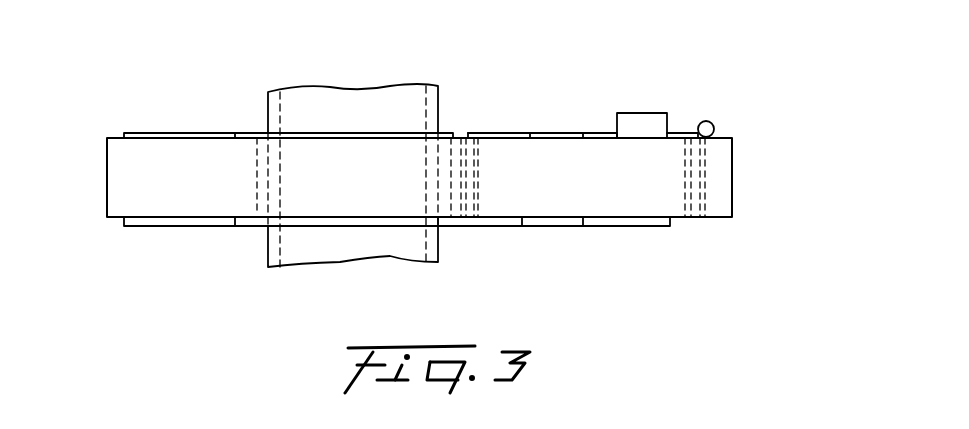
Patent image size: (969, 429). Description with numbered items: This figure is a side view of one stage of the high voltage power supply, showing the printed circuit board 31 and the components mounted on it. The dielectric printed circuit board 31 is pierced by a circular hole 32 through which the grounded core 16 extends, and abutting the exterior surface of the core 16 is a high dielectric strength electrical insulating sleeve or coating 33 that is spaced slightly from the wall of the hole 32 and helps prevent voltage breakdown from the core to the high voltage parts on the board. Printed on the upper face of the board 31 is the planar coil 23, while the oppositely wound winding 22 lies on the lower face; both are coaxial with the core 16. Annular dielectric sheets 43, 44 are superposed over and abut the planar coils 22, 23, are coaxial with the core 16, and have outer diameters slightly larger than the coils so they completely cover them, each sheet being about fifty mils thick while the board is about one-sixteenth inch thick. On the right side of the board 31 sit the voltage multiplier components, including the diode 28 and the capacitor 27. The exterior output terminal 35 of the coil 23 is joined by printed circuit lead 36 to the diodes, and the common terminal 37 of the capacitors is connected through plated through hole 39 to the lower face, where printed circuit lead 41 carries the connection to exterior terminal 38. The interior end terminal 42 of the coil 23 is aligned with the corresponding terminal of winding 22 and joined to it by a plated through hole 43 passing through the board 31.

The core 16 is at (340, 98).
The winding 22 is at (163, 227).
The coil 23 is at (155, 132).
The capacitor 27 is at (713, 122).
The diode 28 is at (653, 112).
The printed circuit board 31 is at (725, 187).
The circular hole 32 is at (263, 132).
The electrical insulating sleeve or coating 33 is at (435, 87).
The exterior output terminal 35 is at (530, 133).
The printed circuit lead 36 is at (597, 133).
The common terminal 37 is at (710, 147).
The exterior terminal 38 is at (522, 226).
The plated through hole 39 is at (695, 217).
The printed circuit lead 41 is at (638, 226).
The interior end terminal 42 is at (475, 133).
The plated through hole / annular dielectric sheet 43 is at (477, 227).
The annular dielectric sheet 44 is at (468, 227).